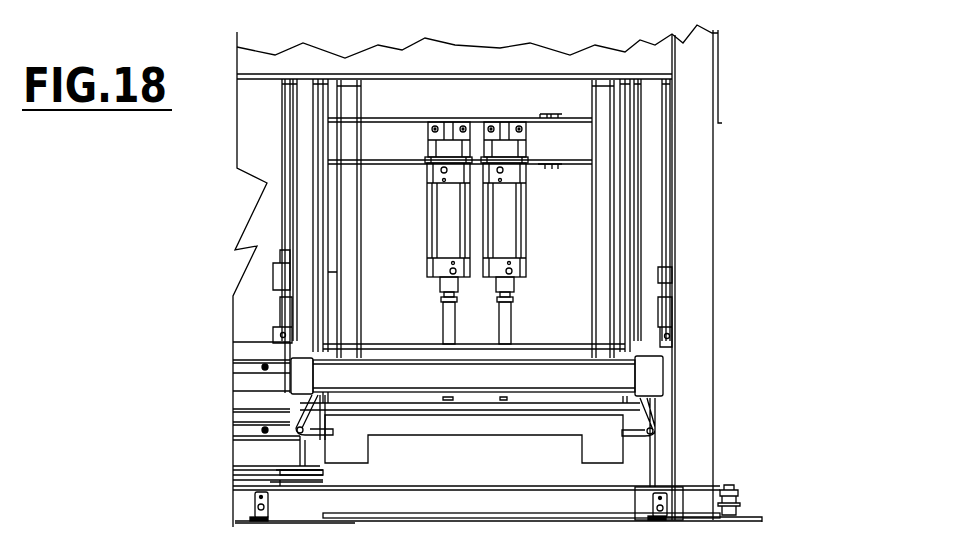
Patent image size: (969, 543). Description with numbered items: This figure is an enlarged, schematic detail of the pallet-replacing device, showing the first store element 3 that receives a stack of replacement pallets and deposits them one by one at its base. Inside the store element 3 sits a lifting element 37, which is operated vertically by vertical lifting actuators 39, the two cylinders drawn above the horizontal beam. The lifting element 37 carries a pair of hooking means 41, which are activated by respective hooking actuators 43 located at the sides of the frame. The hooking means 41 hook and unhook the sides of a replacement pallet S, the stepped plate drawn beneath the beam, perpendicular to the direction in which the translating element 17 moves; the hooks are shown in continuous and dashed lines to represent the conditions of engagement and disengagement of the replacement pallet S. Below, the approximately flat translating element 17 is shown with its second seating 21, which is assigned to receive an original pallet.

The first store element 3 is at (480, 78).
The translating element 17 is at (242, 493).
The second seating 21 is at (470, 487).
The lifting element 37 is at (490, 247).
The vertical lifting actuator 39 is at (317, 364).
The hooking means 41 is at (330, 437).
The hooking actuator 43 is at (277, 275).
The replacement pallet S is at (480, 448).